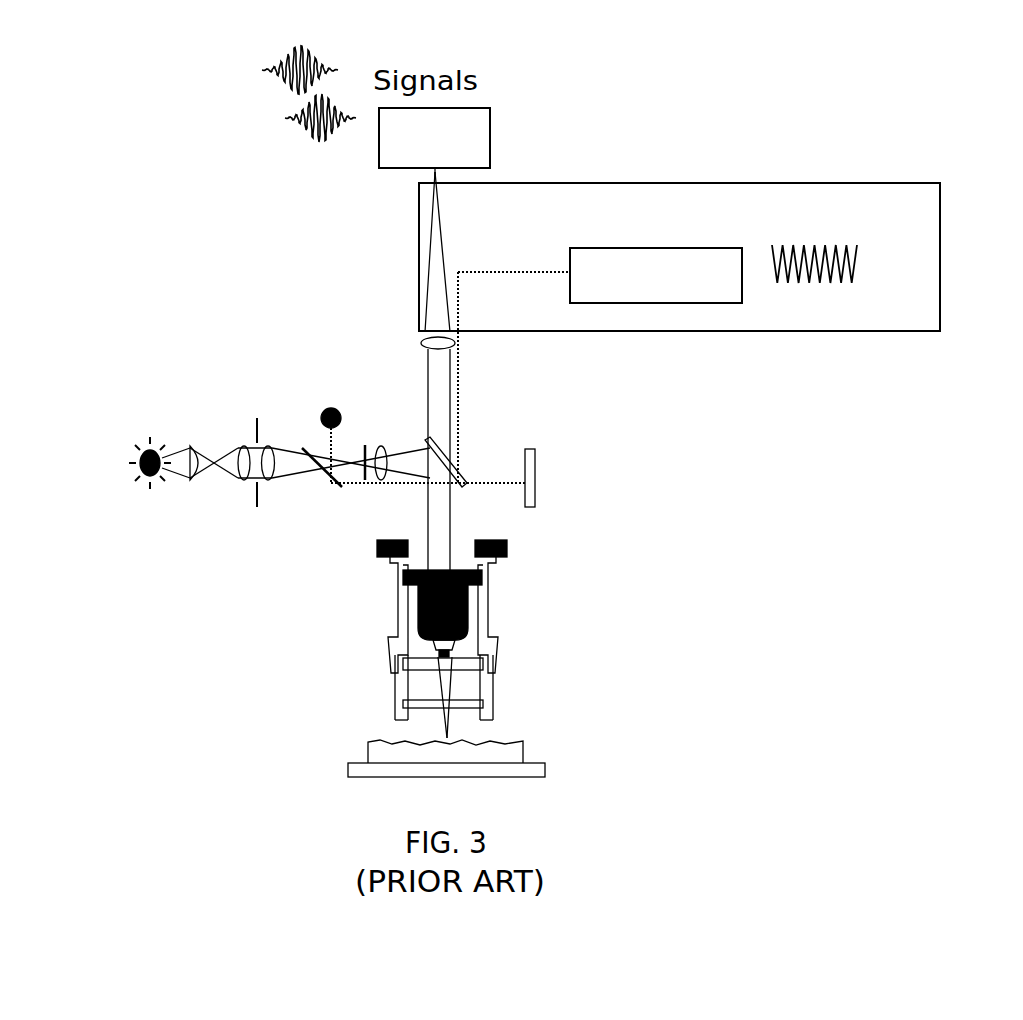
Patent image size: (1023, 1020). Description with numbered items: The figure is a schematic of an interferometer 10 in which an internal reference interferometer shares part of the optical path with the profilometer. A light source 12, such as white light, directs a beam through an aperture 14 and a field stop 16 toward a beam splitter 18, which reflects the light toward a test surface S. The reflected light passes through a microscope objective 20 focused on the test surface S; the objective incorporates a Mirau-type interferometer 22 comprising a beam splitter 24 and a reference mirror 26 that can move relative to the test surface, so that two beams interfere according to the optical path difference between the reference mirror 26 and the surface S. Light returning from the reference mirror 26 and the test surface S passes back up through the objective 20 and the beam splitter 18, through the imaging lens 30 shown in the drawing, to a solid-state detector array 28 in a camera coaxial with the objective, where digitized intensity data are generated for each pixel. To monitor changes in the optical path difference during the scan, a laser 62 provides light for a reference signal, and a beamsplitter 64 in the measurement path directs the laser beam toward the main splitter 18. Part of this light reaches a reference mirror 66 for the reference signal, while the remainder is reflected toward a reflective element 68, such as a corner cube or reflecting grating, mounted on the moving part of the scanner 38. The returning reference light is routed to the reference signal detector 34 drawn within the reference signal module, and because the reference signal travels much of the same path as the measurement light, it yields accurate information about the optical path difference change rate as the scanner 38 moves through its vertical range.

The interferometer 10 is at (645, 144).
The light source 12 is at (135, 450).
The aperture 14 is at (257, 418).
The field stop 16 is at (367, 433).
The beam splitter 18 is at (445, 452).
The microscope objective 20 is at (465, 612).
The interferometer 22 is at (494, 668).
The beam splitter 24 is at (473, 700).
The reference mirror 26 is at (425, 668).
The solid-state detector array 28 is at (492, 130).
The imaging lens 30 is at (461, 258).
The reference signal detector(s) 34 is at (697, 248).
The scanner 38 is at (498, 566).
The laser 62 is at (327, 406).
The beamsplitter 64 is at (321, 478).
The reference mirror 66 is at (537, 468).
The reflective element 68 is at (465, 568).
The test surface S is at (497, 740).